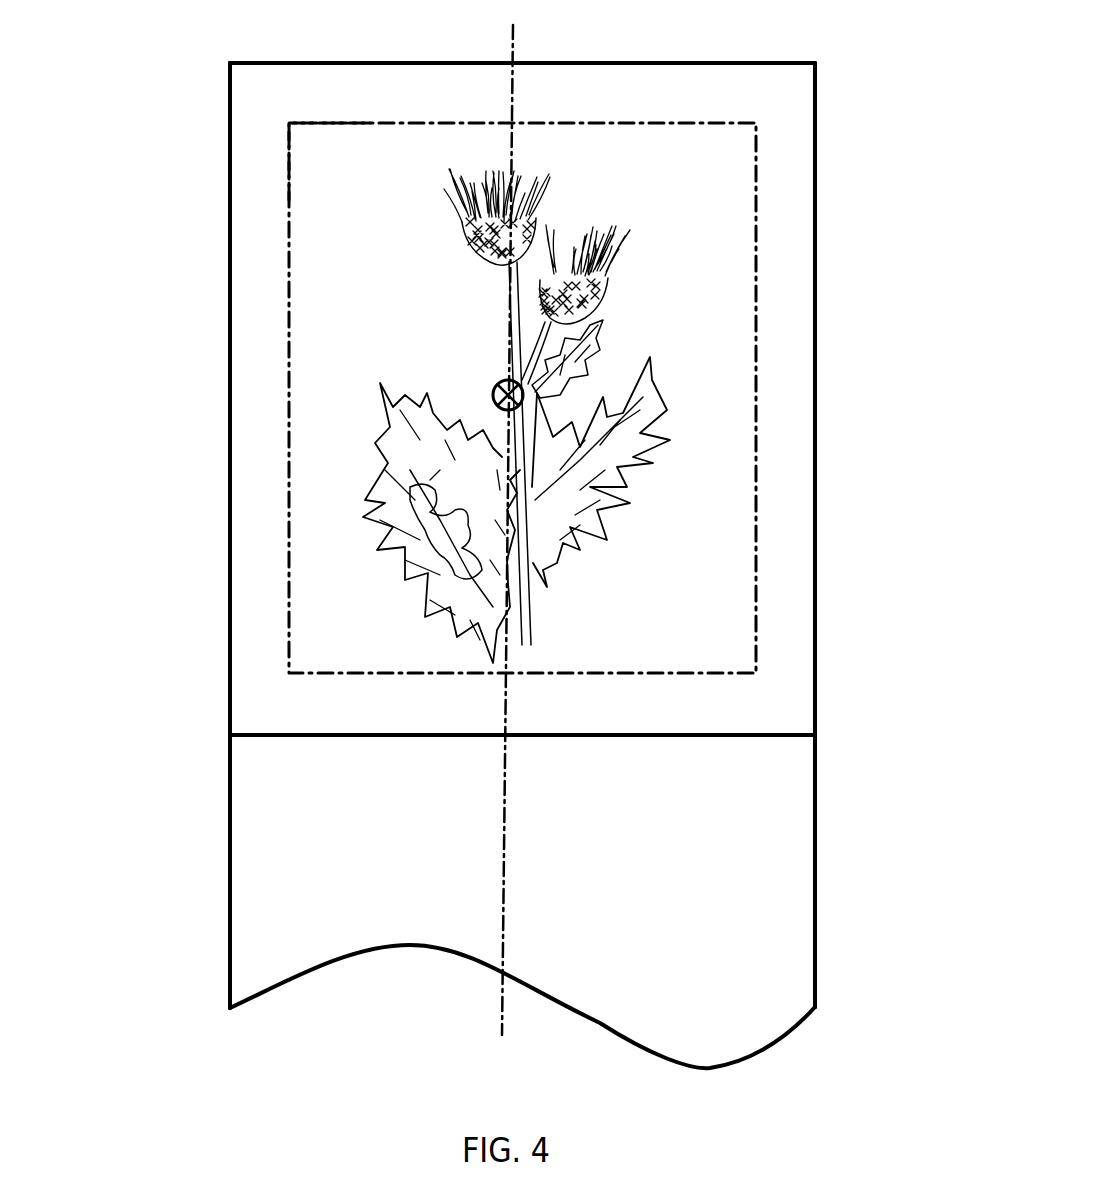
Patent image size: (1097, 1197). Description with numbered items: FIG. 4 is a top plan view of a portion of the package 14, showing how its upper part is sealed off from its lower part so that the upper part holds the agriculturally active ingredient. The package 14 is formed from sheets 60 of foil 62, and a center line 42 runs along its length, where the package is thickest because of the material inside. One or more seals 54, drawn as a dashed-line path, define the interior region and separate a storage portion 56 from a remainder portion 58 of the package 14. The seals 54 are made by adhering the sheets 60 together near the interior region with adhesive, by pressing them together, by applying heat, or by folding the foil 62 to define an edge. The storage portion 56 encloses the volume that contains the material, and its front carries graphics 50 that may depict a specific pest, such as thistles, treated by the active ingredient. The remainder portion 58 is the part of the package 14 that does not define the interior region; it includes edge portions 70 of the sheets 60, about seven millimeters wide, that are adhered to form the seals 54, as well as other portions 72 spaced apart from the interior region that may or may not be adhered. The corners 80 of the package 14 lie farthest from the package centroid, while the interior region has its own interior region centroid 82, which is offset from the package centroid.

The package 14 is at (176, 389).
The center line 42 is at (503, 890).
The graphics 50 is at (350, 337).
The seals 54 is at (592, 122).
The storage portion 56 is at (328, 160).
The remainder portion 58 is at (260, 710).
The sheets 60 is at (258, 397).
The foil 62 is at (241, 524).
The edge portions 70 is at (795, 328).
The other portions 72 is at (737, 992).
The corners 80 is at (196, 56).
The interior region centroid 82 is at (472, 382).